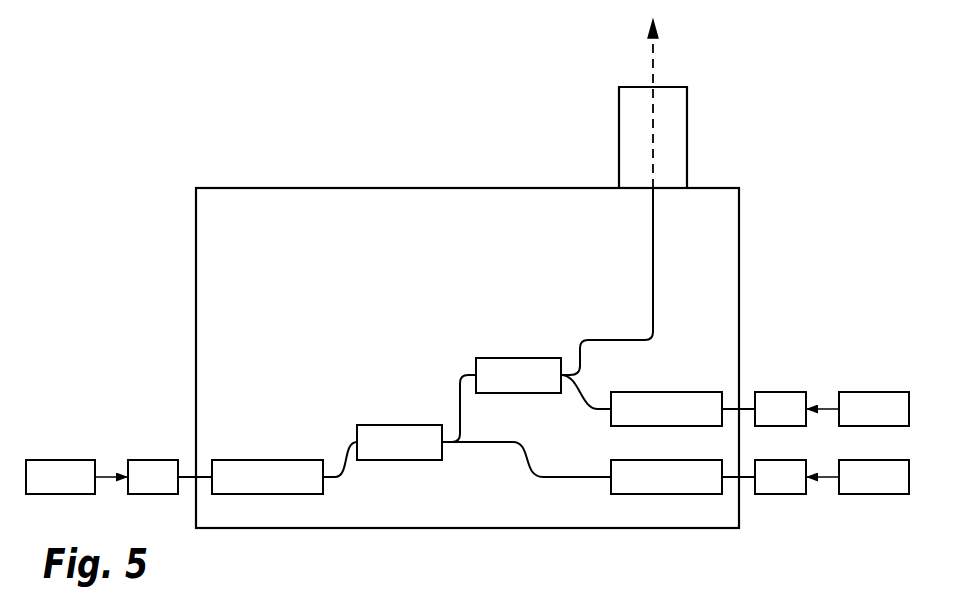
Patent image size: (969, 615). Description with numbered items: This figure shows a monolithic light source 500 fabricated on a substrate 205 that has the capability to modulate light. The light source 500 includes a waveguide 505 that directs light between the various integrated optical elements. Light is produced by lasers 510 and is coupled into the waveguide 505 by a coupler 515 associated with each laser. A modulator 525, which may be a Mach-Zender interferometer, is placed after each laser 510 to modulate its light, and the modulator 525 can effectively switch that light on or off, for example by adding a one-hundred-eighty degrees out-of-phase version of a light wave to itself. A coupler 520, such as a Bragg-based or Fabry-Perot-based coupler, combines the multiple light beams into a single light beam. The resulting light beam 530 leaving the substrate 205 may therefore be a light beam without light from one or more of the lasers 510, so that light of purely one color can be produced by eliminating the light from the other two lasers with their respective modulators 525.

The monolithic light source 500 is at (224, 106).
The substrate 205 is at (253, 234).
The waveguide 505 is at (652, 269).
The laser 510 is at (66, 459).
The coupler 515 is at (152, 459).
The coupler 520 is at (399, 424).
The modulator 525 is at (262, 459).
The light beam 530 is at (651, 68).